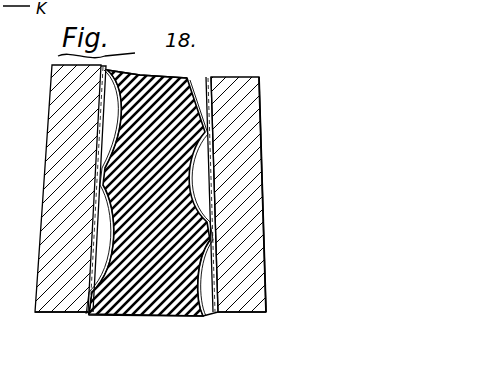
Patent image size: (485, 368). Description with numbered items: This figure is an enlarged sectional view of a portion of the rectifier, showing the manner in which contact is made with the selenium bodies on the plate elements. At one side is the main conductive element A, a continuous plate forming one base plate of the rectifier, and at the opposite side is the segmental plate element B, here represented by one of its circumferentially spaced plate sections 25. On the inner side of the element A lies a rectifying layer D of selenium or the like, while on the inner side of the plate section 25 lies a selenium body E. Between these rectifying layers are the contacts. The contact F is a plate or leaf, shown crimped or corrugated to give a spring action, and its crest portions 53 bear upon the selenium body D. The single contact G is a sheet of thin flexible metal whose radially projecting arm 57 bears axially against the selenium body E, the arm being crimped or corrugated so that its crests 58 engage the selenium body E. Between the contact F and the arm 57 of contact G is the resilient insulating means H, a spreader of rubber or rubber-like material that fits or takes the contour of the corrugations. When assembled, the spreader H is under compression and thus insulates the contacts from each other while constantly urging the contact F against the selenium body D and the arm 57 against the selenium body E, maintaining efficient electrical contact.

The main conductive element A is at (47, 125).
The segmental plate element B is at (263, 145).
The rectifying layer D is at (101, 135).
The selenium body E is at (212, 188).
The contact F is at (121, 102).
The single contact G is at (203, 320).
The resilient insulating means H is at (127, 317).
The plate section 25 is at (300, 93).
The crest portion 53 is at (103, 172).
The radially projecting arm 57 is at (189, 78).
The crest 58 is at (214, 243).